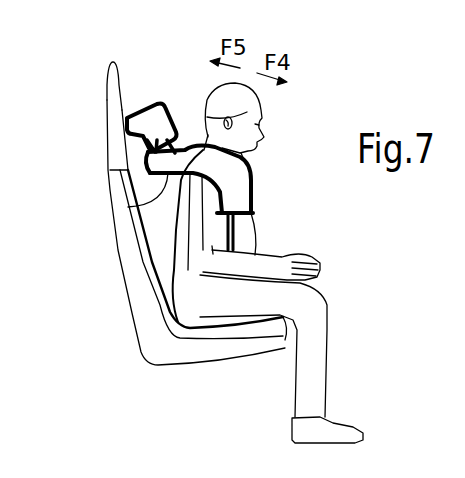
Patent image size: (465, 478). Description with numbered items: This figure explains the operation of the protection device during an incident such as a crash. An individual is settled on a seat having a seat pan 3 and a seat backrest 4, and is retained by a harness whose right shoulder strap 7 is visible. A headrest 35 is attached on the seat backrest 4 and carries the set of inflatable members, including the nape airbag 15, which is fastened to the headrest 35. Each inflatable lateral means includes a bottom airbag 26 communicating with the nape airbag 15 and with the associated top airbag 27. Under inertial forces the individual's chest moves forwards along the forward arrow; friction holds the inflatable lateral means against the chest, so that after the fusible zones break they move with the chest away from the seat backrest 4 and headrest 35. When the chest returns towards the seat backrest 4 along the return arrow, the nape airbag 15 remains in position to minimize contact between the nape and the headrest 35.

The seat pan 3 is at (218, 364).
The seat backrest 4 is at (118, 270).
The right shoulder strap 7 is at (110, 172).
The nape airbag 15 is at (157, 80).
The bottom airbag 26 is at (128, 207).
The top airbag 27 is at (255, 180).
The headrest 35 is at (107, 105).